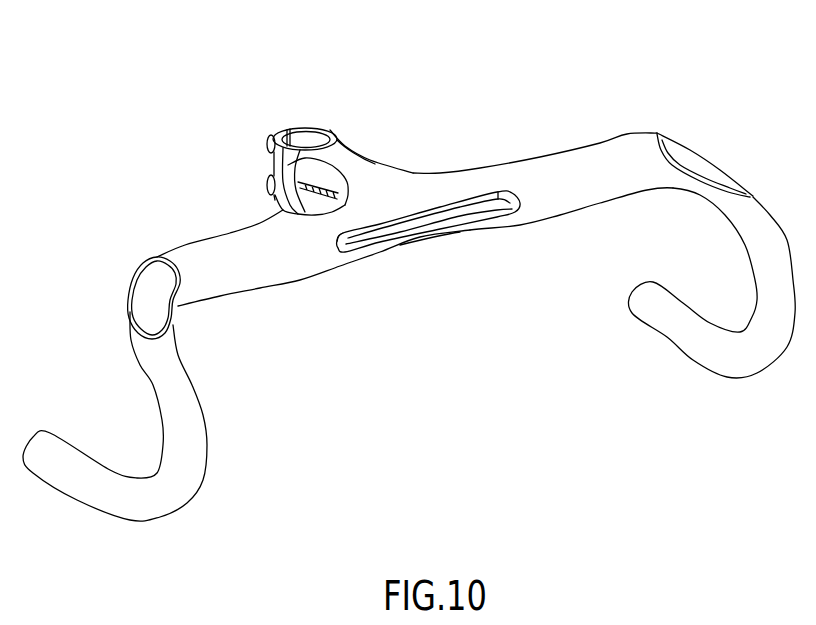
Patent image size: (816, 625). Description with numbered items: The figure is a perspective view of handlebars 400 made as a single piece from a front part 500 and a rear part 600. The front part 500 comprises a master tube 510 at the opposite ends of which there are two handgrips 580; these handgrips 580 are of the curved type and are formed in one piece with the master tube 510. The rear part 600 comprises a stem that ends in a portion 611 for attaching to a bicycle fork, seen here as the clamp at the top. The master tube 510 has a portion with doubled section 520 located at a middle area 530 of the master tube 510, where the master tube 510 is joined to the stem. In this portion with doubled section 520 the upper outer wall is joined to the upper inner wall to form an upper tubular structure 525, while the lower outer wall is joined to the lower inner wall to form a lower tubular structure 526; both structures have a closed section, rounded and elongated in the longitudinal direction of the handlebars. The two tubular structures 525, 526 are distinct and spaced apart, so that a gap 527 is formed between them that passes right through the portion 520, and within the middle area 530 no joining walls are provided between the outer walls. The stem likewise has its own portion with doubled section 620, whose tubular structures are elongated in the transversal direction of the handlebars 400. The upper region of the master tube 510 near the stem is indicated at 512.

The handlebars 400 is at (409, 266).
The front part 500 is at (409, 266).
The master tube 510 is at (232, 270).
The top portion of handlebar 512 is at (432, 190).
The portion with doubled section 520 is at (435, 273).
The upper tubular structure 525 is at (350, 210).
The lower tubular structure 526 is at (340, 258).
The gap 527 is at (480, 221).
The middle area 530 is at (440, 303).
The handgrips 580 is at (185, 447).
The rear part 600 is at (304, 120).
The portion for attaching to a bicycle fork 611 is at (300, 145).
The portion with doubled section 620 is at (352, 151).